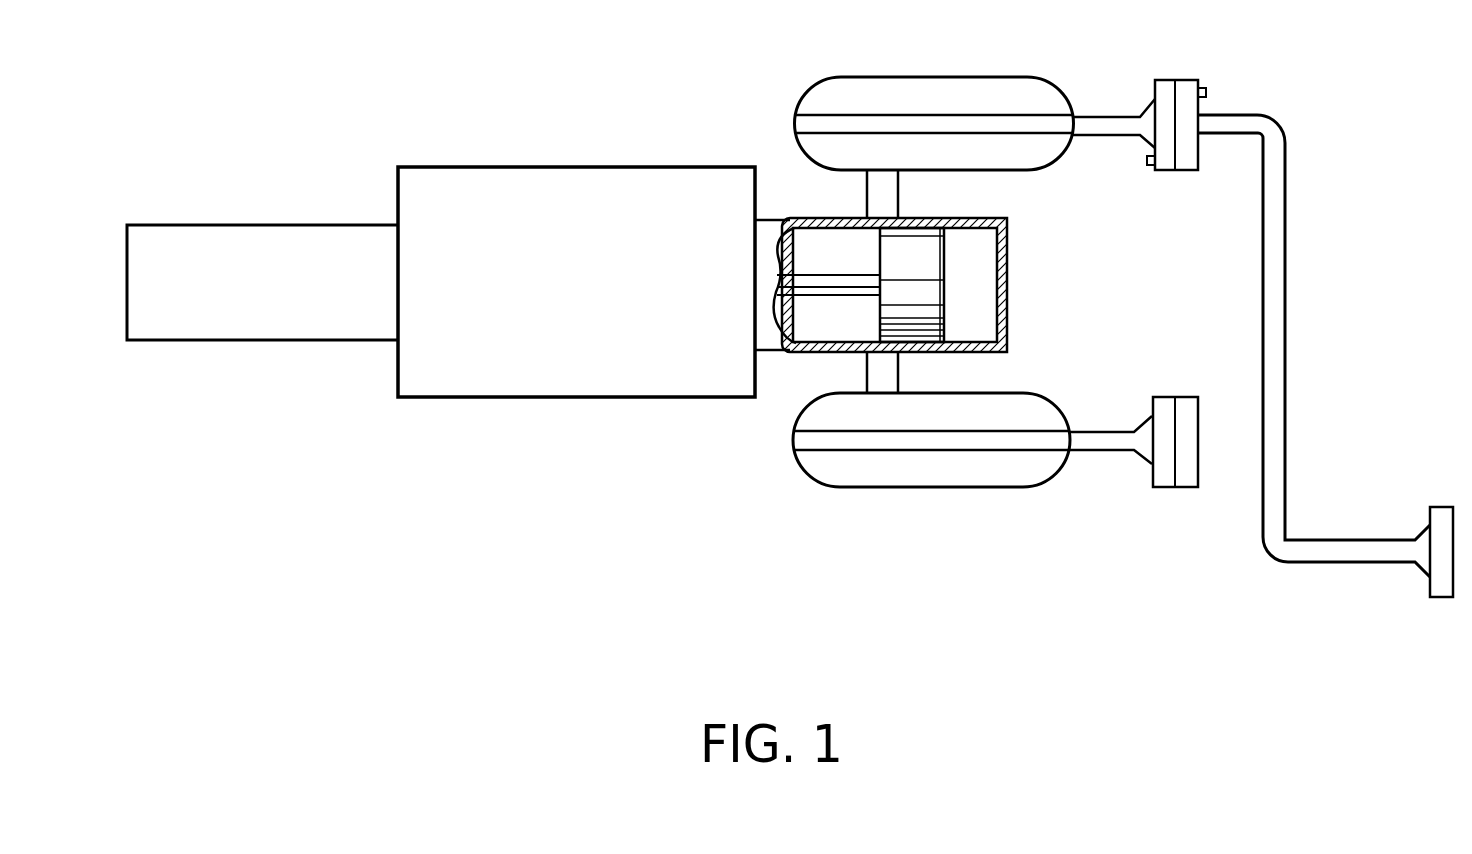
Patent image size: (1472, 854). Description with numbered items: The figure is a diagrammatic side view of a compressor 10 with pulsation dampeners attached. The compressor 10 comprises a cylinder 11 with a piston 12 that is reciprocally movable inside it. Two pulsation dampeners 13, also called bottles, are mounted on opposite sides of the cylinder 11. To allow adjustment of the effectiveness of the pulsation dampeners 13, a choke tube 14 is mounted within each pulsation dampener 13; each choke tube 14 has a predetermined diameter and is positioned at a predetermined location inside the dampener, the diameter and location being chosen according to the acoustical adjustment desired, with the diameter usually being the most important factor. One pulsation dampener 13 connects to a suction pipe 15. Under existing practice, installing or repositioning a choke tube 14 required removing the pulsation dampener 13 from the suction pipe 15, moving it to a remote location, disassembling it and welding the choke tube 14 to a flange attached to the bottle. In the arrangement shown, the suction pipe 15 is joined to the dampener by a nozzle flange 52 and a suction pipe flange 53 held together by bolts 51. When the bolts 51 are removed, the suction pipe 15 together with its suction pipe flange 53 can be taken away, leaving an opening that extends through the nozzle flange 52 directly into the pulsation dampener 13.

The compressor 10 is at (490, 440).
The cylinder 11 is at (1007, 314).
The piston 12 is at (922, 268).
The pulsation dampener 13 is at (1003, 77).
The choke tube 14 is at (916, 115).
The suction pipe 15 is at (1287, 338).
The bolts 51 is at (1205, 90).
The nozzle flange 52 is at (1149, 158).
The suction pipe flange 53 is at (1188, 170).